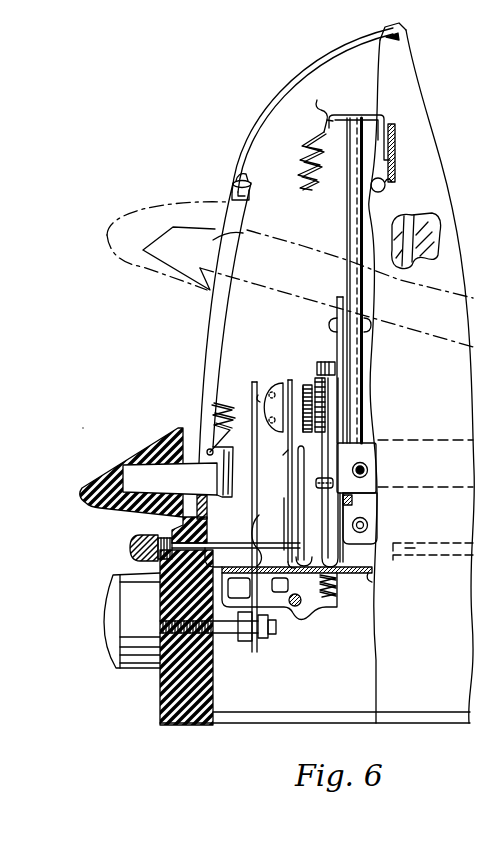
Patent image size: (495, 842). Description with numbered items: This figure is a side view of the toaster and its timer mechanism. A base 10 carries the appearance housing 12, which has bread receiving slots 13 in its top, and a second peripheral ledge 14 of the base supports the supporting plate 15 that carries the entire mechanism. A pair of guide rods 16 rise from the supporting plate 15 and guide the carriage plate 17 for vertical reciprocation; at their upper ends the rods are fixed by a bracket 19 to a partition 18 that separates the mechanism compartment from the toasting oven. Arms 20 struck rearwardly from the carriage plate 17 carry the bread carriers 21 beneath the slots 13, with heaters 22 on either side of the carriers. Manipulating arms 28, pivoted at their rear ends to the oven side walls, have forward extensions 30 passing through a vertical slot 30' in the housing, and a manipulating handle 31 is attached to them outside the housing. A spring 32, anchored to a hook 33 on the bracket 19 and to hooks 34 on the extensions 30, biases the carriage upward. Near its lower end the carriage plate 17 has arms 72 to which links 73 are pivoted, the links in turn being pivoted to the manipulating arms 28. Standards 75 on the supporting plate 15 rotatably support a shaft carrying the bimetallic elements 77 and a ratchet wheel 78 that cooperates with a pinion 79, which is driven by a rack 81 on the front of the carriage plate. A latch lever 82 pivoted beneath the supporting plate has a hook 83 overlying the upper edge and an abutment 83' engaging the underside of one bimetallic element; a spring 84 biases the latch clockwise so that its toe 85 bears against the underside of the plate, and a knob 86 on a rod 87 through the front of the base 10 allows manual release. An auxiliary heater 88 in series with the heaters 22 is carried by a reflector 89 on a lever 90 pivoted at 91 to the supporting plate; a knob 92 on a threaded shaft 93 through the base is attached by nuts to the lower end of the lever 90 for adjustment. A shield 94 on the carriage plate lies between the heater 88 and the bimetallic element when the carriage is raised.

The base 10 is at (160, 693).
The appearance housing 12 is at (278, 96).
The bread receiving slots 13 is at (402, 45).
The second peripheral ledge 14 is at (206, 545).
The supporting plate 15 is at (366, 575).
The guide rods 16 is at (347, 187).
The carriage plate 17 is at (337, 333).
The partition 18 is at (386, 187).
The bracket 19 is at (341, 117).
The arms 20 is at (383, 552).
The bread carriers 21 is at (418, 547).
The heaters 22 is at (424, 252).
The manipulating arms 28 is at (400, 441).
The forward extensions 30 is at (272, 372).
The vertical slot 30' is at (207, 318).
The manipulating handle 31 is at (108, 462).
The spring 32 is at (310, 133).
The hook 33 is at (320, 118).
The hooks 34 is at (208, 455).
The arms 72 is at (375, 529).
The links 73 is at (365, 506).
The standards 75 is at (326, 534).
The bimetallic elements 77 is at (307, 385).
The ratchet wheel 78 is at (304, 448).
The pinion 79 is at (316, 370).
The rack 81 is at (320, 490).
The latch lever 82 is at (290, 470).
The hook 83 is at (301, 392).
The abutment 83' is at (296, 413).
The spring 84 is at (328, 590).
The toe 85 is at (236, 600).
The knob 86 is at (133, 542).
The rod 87 is at (252, 538).
The auxiliary heater 88 is at (277, 458).
The reflector 89 is at (275, 385).
The lever 90 is at (258, 400).
The pivot 91 is at (268, 517).
The knob 92 is at (108, 602).
The shaft 93 is at (236, 628).
The shield 94 is at (300, 497).